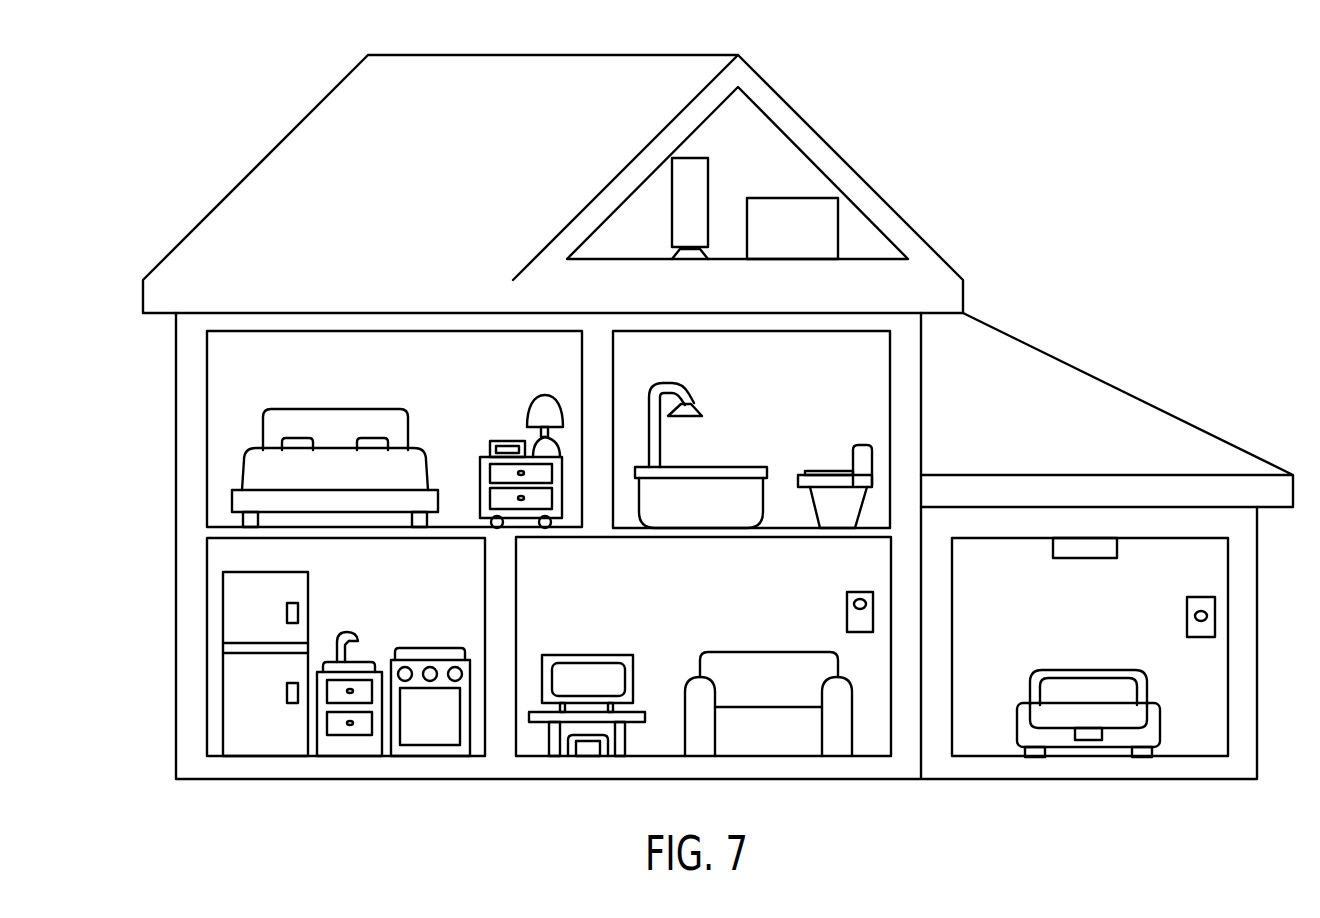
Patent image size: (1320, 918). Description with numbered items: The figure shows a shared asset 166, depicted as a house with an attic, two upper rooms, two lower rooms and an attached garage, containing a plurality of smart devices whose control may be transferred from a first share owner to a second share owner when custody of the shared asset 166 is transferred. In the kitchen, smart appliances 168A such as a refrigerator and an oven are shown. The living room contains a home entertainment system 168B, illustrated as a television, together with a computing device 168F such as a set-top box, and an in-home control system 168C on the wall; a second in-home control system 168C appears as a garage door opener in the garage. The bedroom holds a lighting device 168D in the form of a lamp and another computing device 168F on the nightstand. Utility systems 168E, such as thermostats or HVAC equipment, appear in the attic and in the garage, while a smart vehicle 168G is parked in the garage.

The shared asset 166 is at (1120, 183).
The smart appliances 168A is at (316, 591).
The home entertainment systems 168B is at (606, 637).
The in-home control systems 168C is at (842, 583).
The lighting devices 168D is at (540, 378).
The utility systems 168E is at (758, 188).
The computing devices 168F is at (500, 437).
The smart vehicles 168G is at (1045, 660).